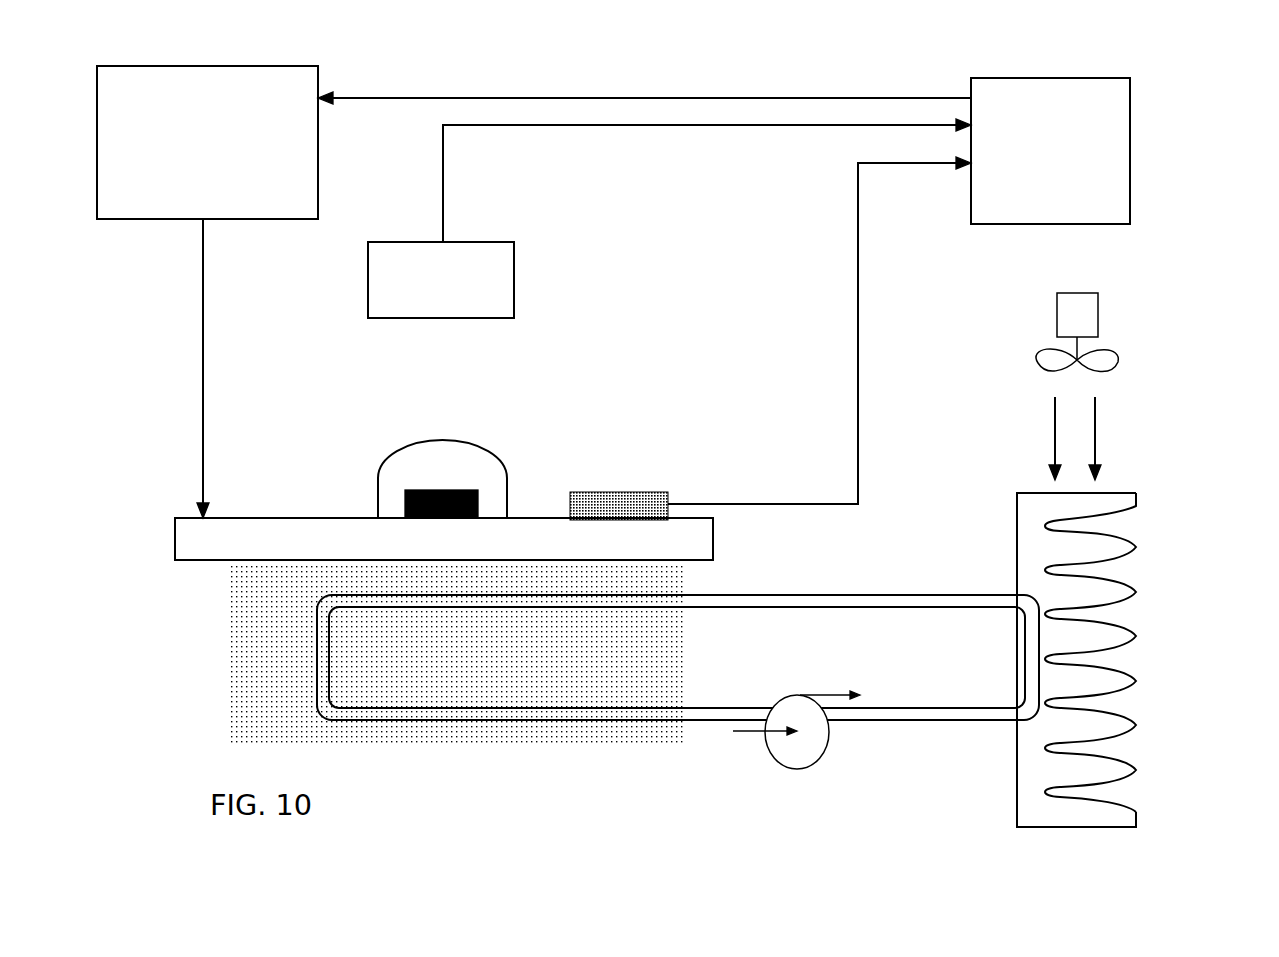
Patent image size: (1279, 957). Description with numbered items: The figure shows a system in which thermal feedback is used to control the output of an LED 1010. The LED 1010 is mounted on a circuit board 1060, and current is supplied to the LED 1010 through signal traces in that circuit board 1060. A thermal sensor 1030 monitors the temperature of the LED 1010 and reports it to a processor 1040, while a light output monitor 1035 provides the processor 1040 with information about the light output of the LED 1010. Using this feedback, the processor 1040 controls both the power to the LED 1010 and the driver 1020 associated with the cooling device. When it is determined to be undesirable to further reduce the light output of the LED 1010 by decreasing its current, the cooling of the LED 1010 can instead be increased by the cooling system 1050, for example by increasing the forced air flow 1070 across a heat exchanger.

The LED 1010 is at (425, 490).
The driver 1020 is at (240, 113).
The thermal sensor 1030 is at (628, 492).
The light output monitor 1035 is at (510, 260).
The processor 1040 is at (1083, 124).
The cooling system 1050 is at (947, 780).
The circuit board 1060 is at (175, 520).
The forced air flow 1070 is at (1098, 350).